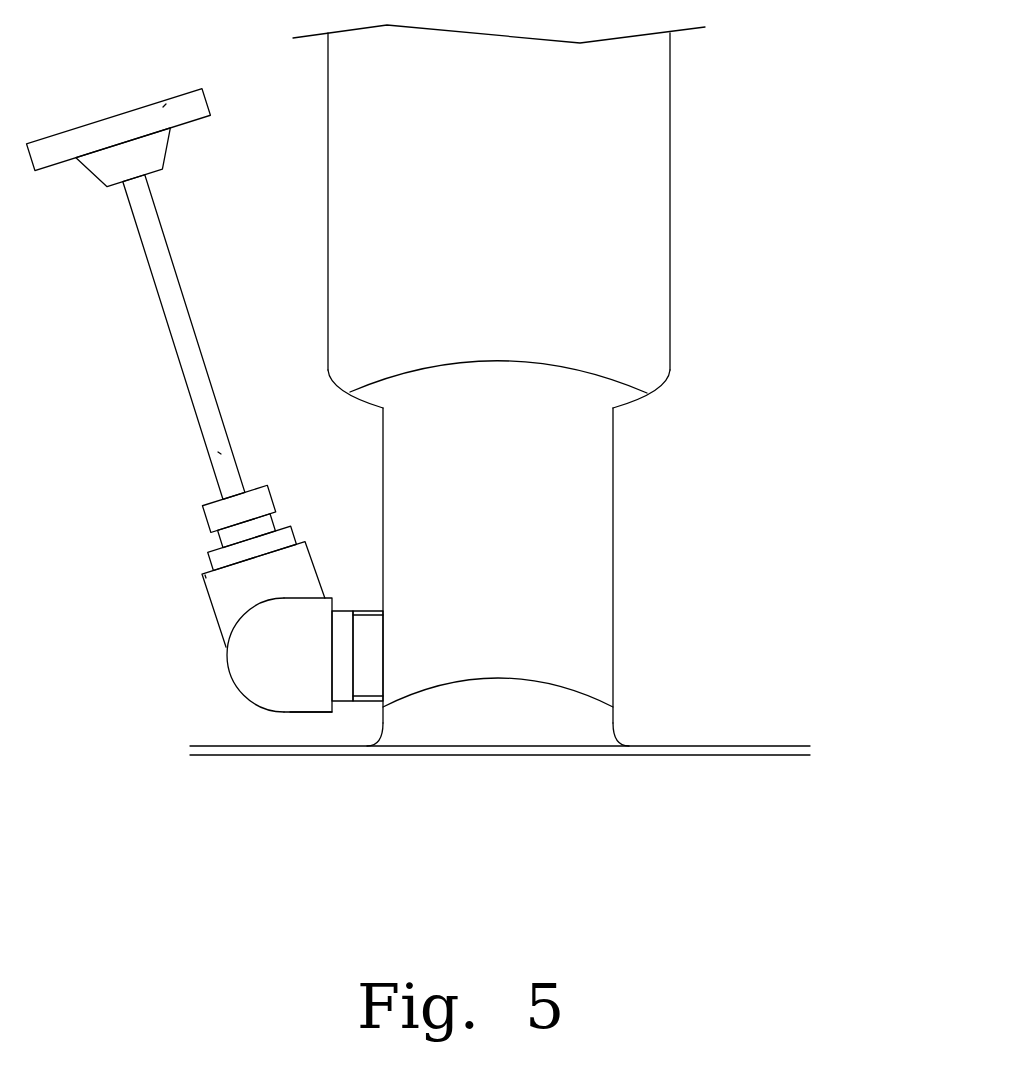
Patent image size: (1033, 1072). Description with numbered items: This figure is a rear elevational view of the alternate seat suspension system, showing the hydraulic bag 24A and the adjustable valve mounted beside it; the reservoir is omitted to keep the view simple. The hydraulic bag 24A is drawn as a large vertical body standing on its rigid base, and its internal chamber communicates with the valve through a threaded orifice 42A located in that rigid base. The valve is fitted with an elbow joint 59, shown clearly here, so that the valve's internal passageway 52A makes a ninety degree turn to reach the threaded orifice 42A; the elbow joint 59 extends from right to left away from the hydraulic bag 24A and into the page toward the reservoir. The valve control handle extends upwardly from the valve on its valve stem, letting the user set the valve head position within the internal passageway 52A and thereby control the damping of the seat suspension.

The hydraulic bag 24A is at (695, 373).
The elbow joint 59 is at (260, 663).
The threaded orifice 42A is at (385, 655).
The internal passageway 52A is at (315, 680).